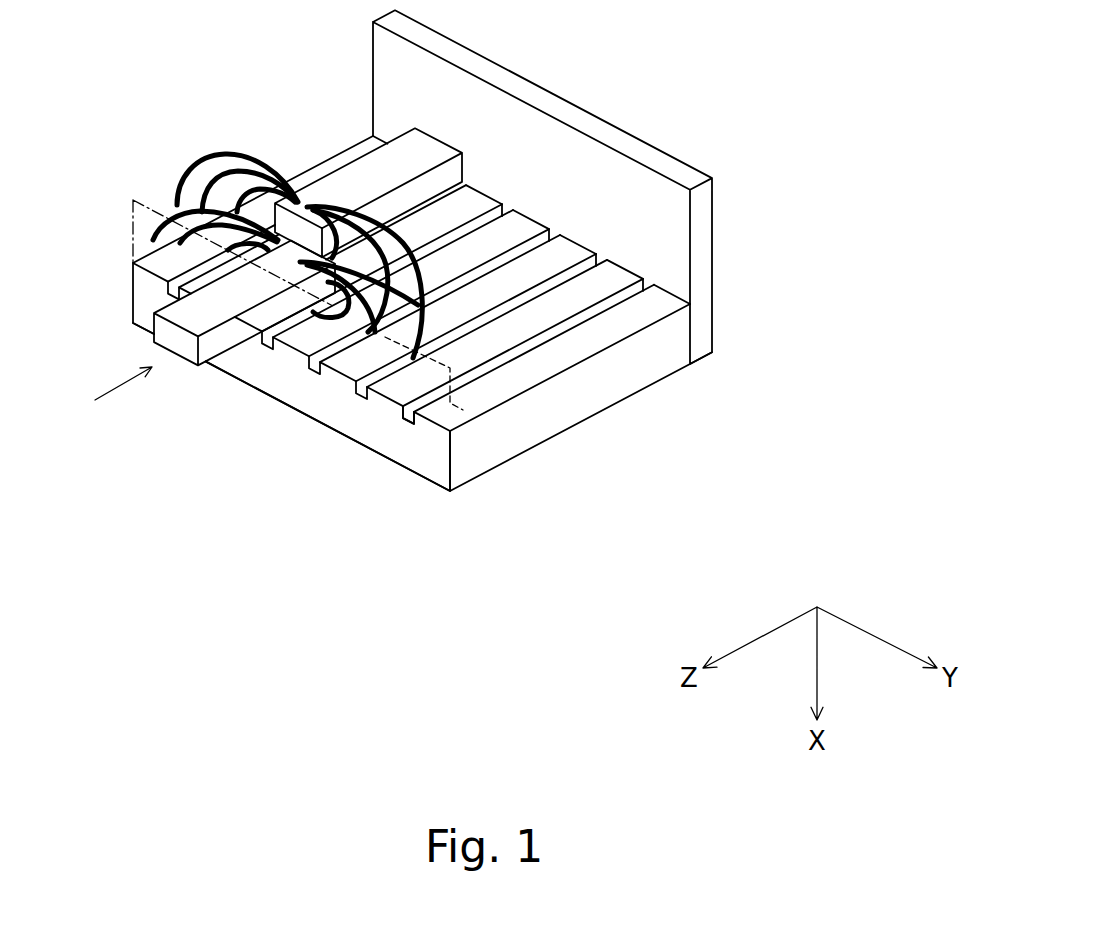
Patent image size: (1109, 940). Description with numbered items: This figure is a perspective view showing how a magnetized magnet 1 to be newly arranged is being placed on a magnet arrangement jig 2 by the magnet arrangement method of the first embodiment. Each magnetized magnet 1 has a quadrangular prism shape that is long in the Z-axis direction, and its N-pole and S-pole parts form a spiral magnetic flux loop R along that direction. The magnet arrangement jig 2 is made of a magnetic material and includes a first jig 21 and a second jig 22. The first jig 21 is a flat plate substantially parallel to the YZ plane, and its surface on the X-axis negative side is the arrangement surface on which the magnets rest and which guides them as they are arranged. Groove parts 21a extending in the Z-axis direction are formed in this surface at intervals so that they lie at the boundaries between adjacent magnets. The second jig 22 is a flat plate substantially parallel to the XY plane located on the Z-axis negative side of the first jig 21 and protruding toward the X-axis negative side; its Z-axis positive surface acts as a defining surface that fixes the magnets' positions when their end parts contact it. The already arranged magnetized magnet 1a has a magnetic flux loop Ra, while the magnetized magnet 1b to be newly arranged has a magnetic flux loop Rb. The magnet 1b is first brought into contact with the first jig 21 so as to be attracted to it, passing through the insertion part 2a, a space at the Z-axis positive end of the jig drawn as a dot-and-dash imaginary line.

The magnetized magnet 1 is at (308, 286).
The already arranged magnetized magnet 1a is at (332, 177).
The magnetized magnet to be newly arranged 1b is at (205, 365).
The magnetic flux loop R is at (276, 280).
The magnetic flux loop of the already arranged magnetized magnet Ra is at (195, 157).
The magnetic flux loop of the magnetized magnet to be newly arranged Rb is at (362, 307).
The magnet arrangement jig 2 is at (459, 299).
The first jig 21 is at (575, 441).
The groove part 21a is at (408, 413).
The second jig 22 is at (712, 254).
The insertion part 2a is at (452, 401).